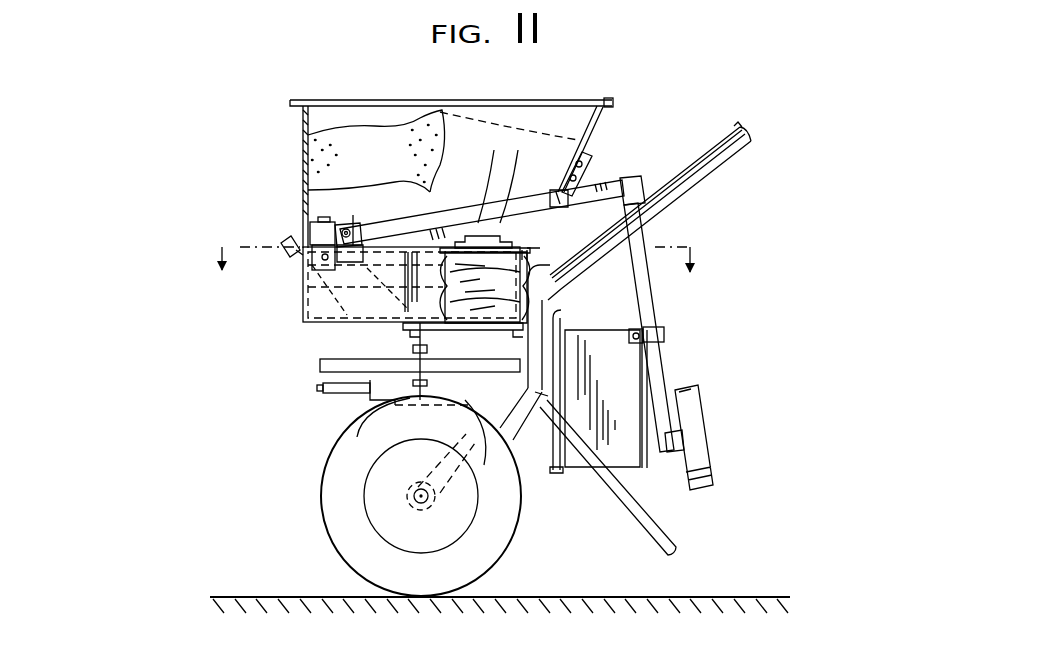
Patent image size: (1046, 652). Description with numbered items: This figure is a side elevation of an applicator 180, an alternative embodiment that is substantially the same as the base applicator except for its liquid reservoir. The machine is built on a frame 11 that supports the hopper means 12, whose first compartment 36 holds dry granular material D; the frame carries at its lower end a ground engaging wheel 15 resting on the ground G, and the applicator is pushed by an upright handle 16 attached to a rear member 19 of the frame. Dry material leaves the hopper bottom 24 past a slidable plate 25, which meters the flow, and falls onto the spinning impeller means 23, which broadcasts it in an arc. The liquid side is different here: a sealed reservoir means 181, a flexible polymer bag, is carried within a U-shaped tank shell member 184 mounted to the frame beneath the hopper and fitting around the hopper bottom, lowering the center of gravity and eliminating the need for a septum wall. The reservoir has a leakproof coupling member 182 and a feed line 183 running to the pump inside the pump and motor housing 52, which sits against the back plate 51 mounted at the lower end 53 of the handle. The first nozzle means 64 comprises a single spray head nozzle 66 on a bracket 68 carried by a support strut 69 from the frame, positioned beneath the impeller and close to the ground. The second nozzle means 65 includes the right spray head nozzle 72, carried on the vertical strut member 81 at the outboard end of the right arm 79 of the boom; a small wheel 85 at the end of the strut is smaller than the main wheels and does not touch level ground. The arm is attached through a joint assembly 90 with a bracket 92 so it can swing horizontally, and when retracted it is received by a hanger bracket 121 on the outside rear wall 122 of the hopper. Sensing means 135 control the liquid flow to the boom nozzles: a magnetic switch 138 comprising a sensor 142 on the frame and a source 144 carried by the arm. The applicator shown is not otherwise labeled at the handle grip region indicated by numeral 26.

The applicator 180 is at (290, 70).
The dry granular material D is at (380, 140).
The first compartment 36 is at (430, 105).
The hopper means 12 is at (492, 98).
The outside rear wall 122 is at (598, 122).
The hanger bracket 121 is at (592, 170).
The handle grip 26 is at (735, 142).
The handle 16 is at (740, 160).
The source 144 is at (493, 172).
The magnetic switch 138 is at (490, 226).
The sensor 142 is at (505, 232).
The bracket 92 is at (352, 215).
The right arm 79 is at (436, 212).
The sensing means 135 is at (452, 237).
The joint assembly 90 is at (308, 220).
The sealed reservoir means 181 is at (540, 262).
The frame 11 is at (549, 275).
The leakproof coupling member 182 is at (290, 258).
The feed line 183 is at (560, 309).
The vertical strut member 81 is at (655, 304).
The tank shell member 184 is at (300, 315).
The hopper bottom 24 is at (368, 325).
The slidable plate 25 is at (414, 337).
The impeller means 23 is at (318, 360).
The right spray head nozzle 72 is at (665, 333).
The second nozzle means 65 is at (630, 346).
The single spray head nozzle 66 is at (320, 386).
The first nozzle means 64 is at (336, 398).
The bracket 68 is at (356, 427).
The rear member 19 is at (545, 365).
The lower end of handle 53 is at (546, 405).
The support strut 69 is at (462, 447).
The ground engaging wheel 15 is at (486, 563).
The back plate 51 is at (554, 474).
The pump and motor housing 52 is at (625, 462).
The wheel 85 is at (700, 422).
The ground G is at (725, 596).